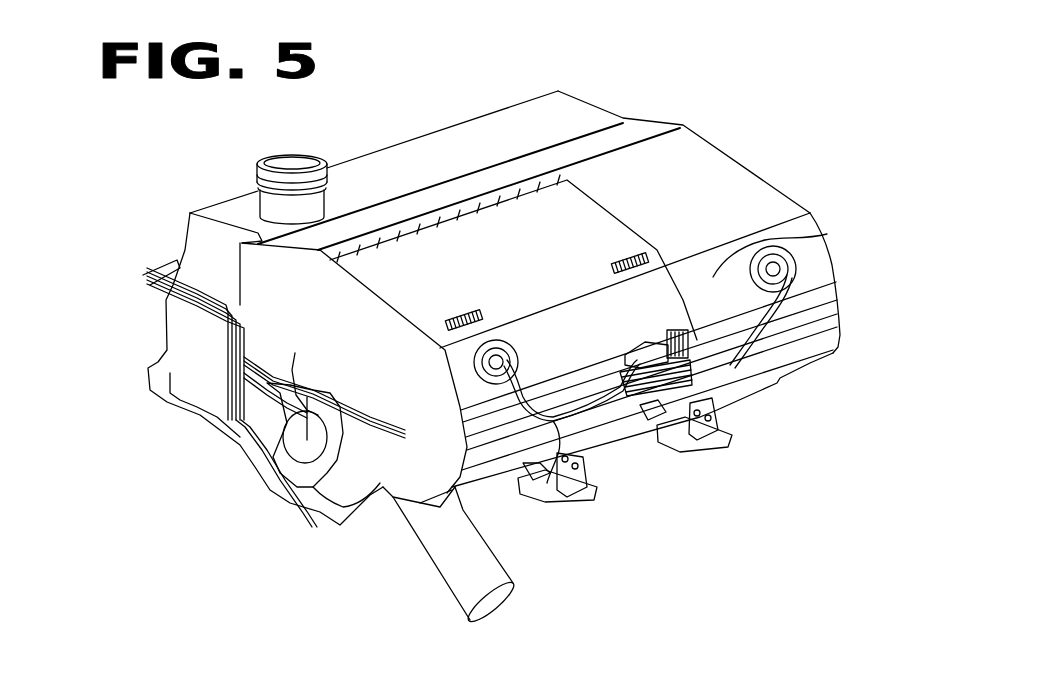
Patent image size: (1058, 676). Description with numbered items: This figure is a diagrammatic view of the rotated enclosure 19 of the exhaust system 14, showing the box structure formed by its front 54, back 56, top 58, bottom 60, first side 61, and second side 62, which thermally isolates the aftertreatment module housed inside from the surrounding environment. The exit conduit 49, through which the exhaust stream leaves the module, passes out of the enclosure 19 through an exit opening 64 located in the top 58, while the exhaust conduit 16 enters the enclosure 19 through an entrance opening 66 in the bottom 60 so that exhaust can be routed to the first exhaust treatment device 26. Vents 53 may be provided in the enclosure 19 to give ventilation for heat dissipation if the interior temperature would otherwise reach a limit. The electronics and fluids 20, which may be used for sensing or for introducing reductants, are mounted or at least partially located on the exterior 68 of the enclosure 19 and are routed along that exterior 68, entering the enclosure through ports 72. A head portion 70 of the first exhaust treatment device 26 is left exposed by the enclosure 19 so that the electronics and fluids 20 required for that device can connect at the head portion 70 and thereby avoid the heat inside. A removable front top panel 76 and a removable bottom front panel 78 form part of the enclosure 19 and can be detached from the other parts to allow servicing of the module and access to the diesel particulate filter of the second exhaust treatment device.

The exhaust system 14 is at (765, 90).
The exhaust conduit 16 is at (460, 581).
The enclosure 19 is at (601, 91).
The electronics and fluids 20 is at (663, 433).
The first exhaust treatment device 26 is at (283, 483).
The exit conduit 49 is at (292, 155).
The vents 53 is at (467, 312).
The front 54 is at (827, 234).
The back 56 is at (430, 125).
The top 58 is at (593, 189).
The bottom 60 is at (343, 534).
The first side 61 is at (336, 351).
The second side 62 is at (774, 170).
The exit opening 64 is at (253, 230).
The entrance opening 66 is at (384, 502).
The exterior 68 is at (497, 130).
The head portion 70 is at (307, 510).
The ports 72 is at (520, 350).
The front top panel 76 is at (538, 261).
The bottom front panel 78 is at (597, 435).